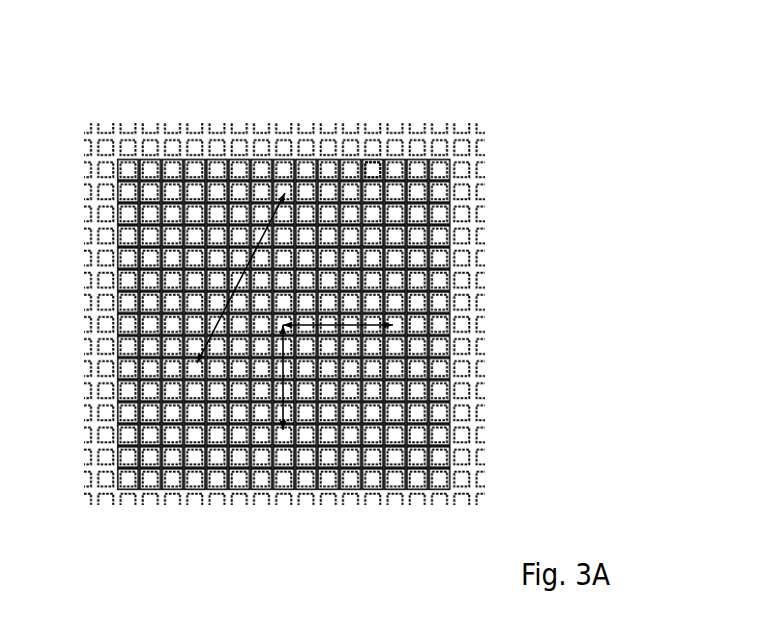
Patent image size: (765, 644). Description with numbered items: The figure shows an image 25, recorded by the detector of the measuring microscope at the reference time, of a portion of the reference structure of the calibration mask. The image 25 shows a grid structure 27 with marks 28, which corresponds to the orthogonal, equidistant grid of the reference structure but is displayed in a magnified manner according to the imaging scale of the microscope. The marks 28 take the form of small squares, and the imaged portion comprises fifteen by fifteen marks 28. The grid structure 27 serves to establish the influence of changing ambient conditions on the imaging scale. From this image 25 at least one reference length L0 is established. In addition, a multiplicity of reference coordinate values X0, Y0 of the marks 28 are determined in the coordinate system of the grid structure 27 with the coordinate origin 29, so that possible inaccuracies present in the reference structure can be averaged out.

The image 25 is at (551, 156).
The grid structure 27 is at (514, 283).
The marks 28 is at (367, 170).
The coordinate origin 29 is at (318, 159).
The reference length L0 is at (84, 254).
The reference coordinate value in X-direction X0 is at (410, 372).
The reference coordinate value in Y-direction Y0 is at (400, 411).